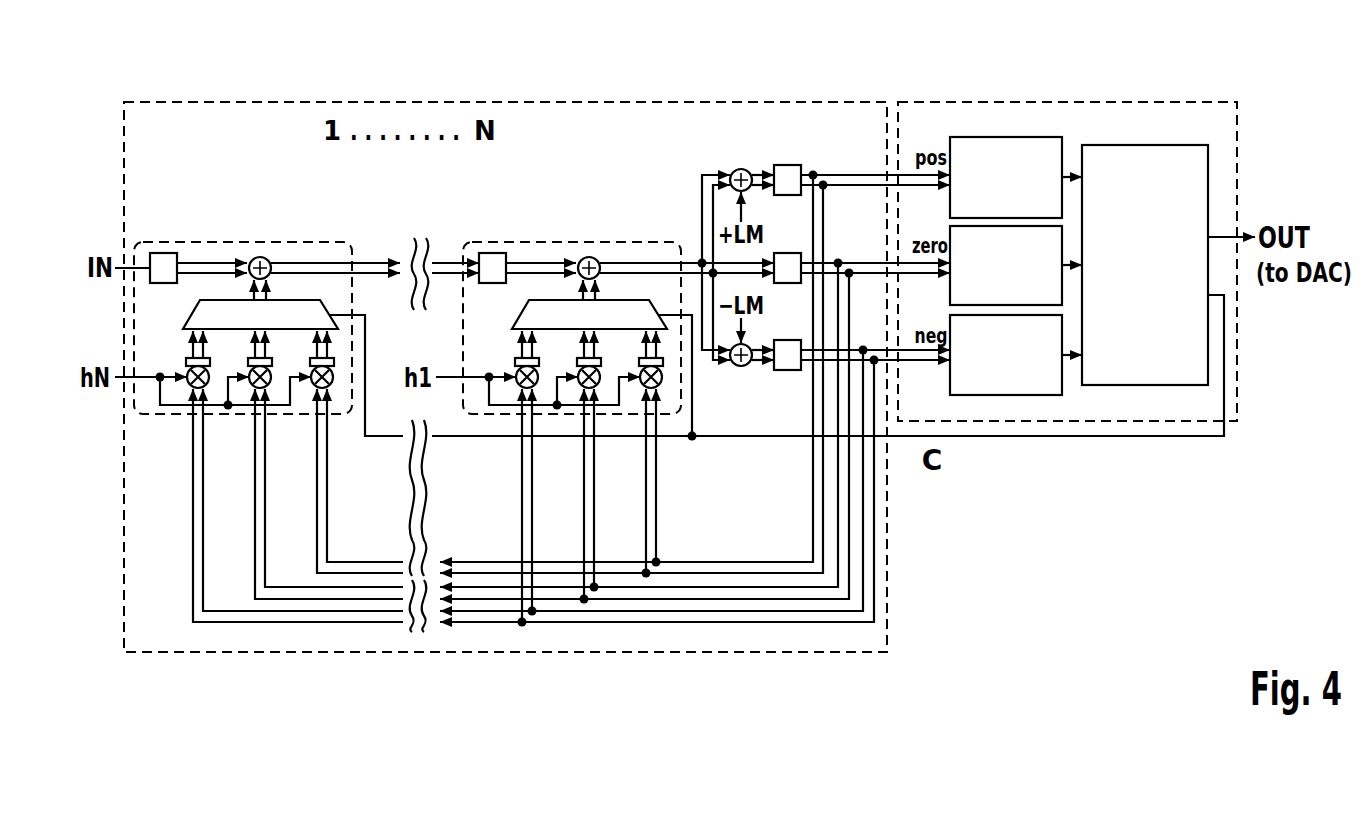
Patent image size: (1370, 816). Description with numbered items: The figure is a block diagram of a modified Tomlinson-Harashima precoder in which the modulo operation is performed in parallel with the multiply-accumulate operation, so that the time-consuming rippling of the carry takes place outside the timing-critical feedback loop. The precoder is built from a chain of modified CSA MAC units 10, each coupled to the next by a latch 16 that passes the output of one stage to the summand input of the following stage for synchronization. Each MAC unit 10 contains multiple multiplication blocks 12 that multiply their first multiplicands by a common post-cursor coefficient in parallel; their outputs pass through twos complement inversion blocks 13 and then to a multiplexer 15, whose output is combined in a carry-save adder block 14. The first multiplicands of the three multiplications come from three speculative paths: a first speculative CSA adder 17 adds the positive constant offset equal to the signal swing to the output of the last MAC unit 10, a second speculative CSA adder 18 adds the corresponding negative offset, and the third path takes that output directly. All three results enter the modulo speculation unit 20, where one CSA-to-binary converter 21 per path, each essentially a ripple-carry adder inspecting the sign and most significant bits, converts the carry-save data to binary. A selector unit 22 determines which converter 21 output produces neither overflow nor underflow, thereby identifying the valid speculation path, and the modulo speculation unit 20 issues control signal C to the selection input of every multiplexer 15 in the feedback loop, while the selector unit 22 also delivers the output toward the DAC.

The modified CSA MAC unit 10 is at (206, 242).
The multiplication block 12 is at (334, 371).
The 2s complement inversion block 13 is at (186, 360).
The carry-save adder block 14 is at (258, 257).
The multiplexer 15 is at (296, 300).
The latch 16 is at (164, 253).
The first speculative CSA adder 17 is at (741, 169).
The second speculative CSA adder 18 is at (741, 367).
The modulo speculation unit 20 is at (1135, 102).
The CSA-to-binary converter 21 is at (1020, 137).
The selector unit 22 is at (1180, 145).